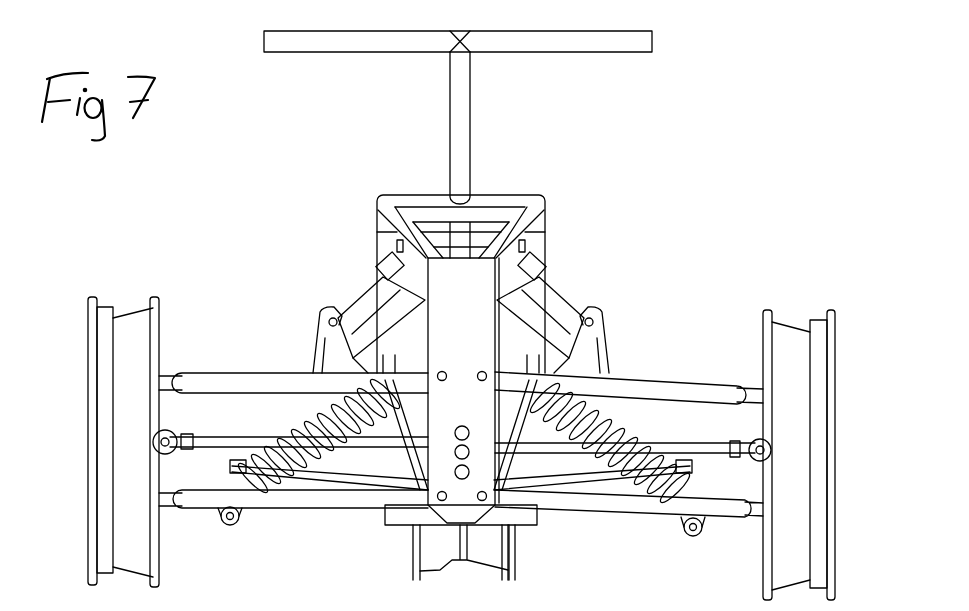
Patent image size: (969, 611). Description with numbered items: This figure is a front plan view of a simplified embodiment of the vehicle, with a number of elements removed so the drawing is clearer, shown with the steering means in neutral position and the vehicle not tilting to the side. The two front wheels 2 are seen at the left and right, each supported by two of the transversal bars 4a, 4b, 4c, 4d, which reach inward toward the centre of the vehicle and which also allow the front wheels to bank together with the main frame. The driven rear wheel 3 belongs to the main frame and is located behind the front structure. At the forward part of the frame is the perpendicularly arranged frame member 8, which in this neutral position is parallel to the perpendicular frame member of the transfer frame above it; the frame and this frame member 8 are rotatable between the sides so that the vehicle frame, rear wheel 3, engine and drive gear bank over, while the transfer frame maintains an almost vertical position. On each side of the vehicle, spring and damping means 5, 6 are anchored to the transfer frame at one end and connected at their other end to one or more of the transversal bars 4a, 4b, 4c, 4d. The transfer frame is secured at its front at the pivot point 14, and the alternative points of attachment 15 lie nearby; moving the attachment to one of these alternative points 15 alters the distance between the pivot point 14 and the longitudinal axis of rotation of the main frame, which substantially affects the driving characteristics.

The front wheel 2 is at (162, 573).
The driven rear wheel 3 is at (447, 560).
The transversal bar 4a is at (652, 387).
The transversal bar 4b is at (632, 517).
The transversal bar 4c is at (252, 380).
The transversal bar 4d is at (298, 508).
The spring means 5 is at (456, 440).
The damping means 6 is at (303, 417).
The perpendicularly arranged frame member 8 is at (473, 505).
The pivot point 14 is at (468, 438).
The alternative points of attachment 15 is at (457, 478).